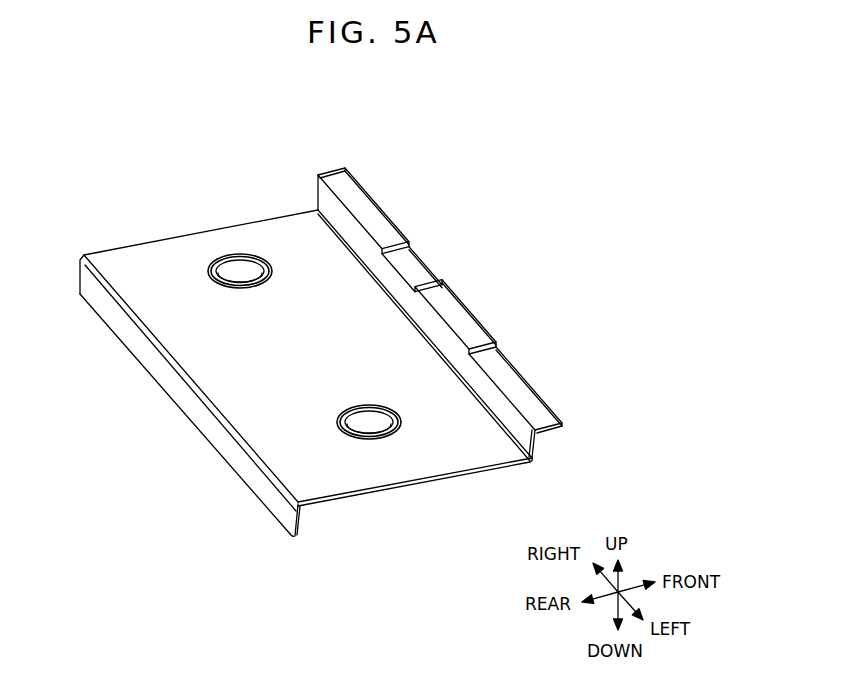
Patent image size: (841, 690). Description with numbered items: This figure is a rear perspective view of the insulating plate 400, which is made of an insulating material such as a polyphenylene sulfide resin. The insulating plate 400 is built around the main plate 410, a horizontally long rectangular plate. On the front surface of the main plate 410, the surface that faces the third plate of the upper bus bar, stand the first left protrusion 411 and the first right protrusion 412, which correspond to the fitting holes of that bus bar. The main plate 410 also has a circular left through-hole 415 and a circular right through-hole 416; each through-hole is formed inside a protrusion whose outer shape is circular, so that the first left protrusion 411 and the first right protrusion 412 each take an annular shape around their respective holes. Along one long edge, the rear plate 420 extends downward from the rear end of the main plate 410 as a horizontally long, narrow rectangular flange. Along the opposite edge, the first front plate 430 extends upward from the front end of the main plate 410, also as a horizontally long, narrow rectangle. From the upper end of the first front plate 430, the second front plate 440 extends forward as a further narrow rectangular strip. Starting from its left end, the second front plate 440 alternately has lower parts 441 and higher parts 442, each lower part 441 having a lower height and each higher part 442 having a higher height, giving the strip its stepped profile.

The insulating plate 400 is at (352, 155).
The main plate 410 is at (157, 267).
The first left protrusion 411 is at (372, 410).
The first right protrusion 412 is at (244, 256).
The circular left through-hole 415 is at (360, 420).
The circular right through-hole 416 is at (233, 270).
The rear plate 420 is at (183, 398).
The first front plate 430 is at (505, 407).
The second front plate 440 is at (500, 337).
The lower parts 441 is at (415, 267).
The higher parts 442 is at (375, 223).